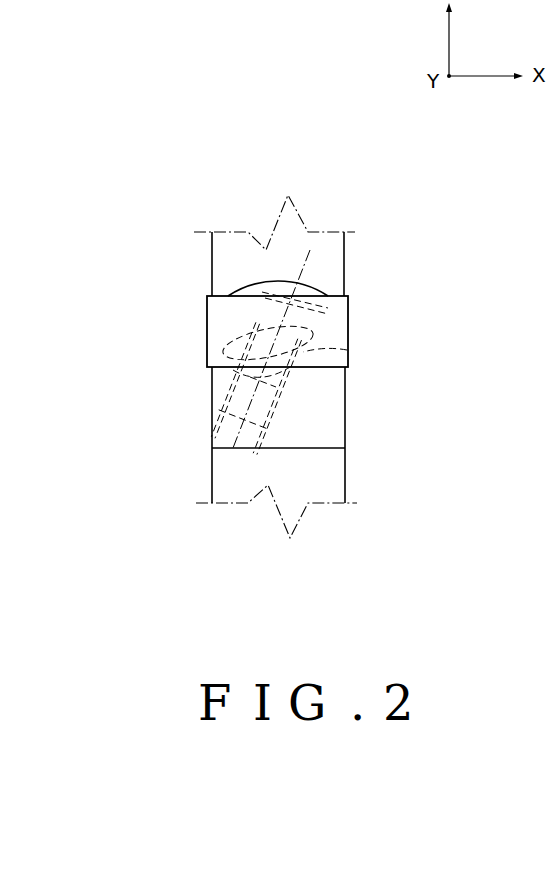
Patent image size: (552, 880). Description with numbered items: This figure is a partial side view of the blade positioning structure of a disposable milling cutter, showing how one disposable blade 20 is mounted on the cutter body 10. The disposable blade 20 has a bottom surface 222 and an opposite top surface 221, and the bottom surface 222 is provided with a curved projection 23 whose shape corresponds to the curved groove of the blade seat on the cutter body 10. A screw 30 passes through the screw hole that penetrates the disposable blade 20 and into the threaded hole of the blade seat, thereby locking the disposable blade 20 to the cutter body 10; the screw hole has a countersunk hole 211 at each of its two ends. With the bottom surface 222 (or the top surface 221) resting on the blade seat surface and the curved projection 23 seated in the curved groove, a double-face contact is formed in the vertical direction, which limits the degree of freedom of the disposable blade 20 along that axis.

The cutter body 10 is at (323, 482).
The disposable blade 20 is at (217, 329).
The top surface 221 is at (212, 293).
The bottom surface 222 is at (212, 385).
The curved projection 23 is at (305, 287).
The screw 30 is at (302, 326).
The countersunk hole 211 is at (347, 350).